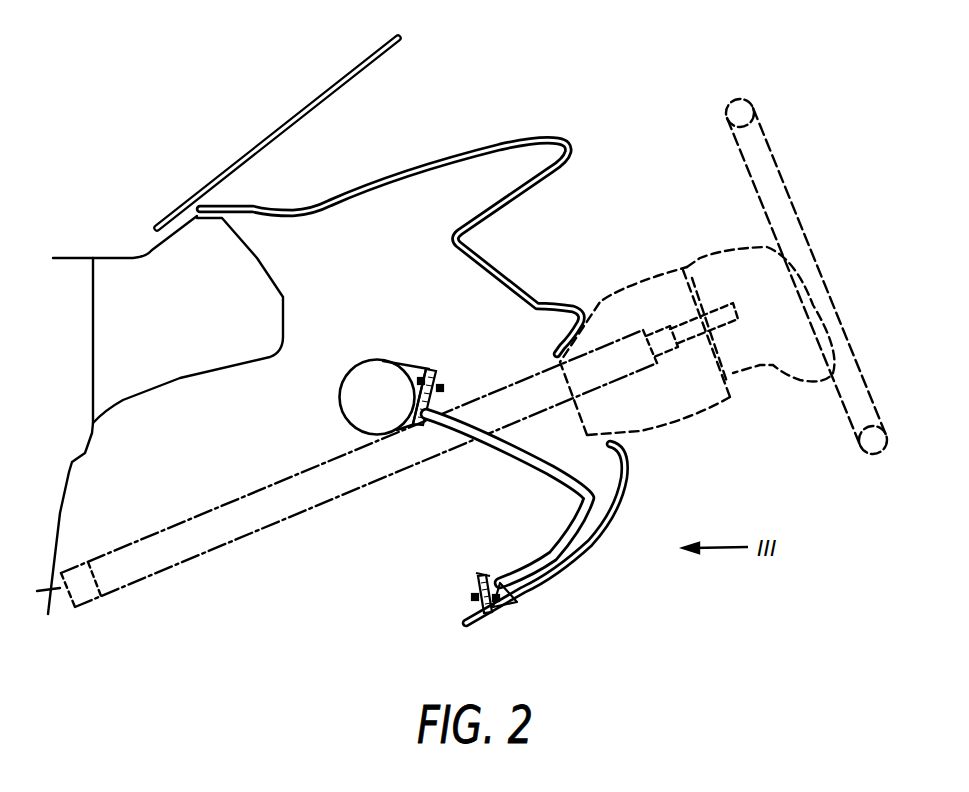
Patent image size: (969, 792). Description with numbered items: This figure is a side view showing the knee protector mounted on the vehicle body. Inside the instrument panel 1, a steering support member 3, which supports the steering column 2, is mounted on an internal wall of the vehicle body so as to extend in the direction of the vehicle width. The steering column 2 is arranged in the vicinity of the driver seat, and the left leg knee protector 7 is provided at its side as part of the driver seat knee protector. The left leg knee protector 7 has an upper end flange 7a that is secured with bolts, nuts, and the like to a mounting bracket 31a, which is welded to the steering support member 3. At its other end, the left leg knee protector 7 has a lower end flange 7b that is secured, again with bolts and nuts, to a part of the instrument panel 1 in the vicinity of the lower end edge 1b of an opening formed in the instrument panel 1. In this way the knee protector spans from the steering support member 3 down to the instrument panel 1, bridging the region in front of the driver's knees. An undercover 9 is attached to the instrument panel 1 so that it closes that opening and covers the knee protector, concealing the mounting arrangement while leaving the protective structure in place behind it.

The instrument panel 1 is at (508, 140).
The lower end edge 1b is at (478, 583).
The steering column 2 is at (738, 412).
The steering support member 3 is at (361, 376).
The mounting bracket 31a is at (410, 360).
The left leg knee protector 7 is at (530, 470).
The upper end flange 7a is at (441, 378).
The lower end flange 7b is at (516, 602).
The undercover 9 is at (580, 560).